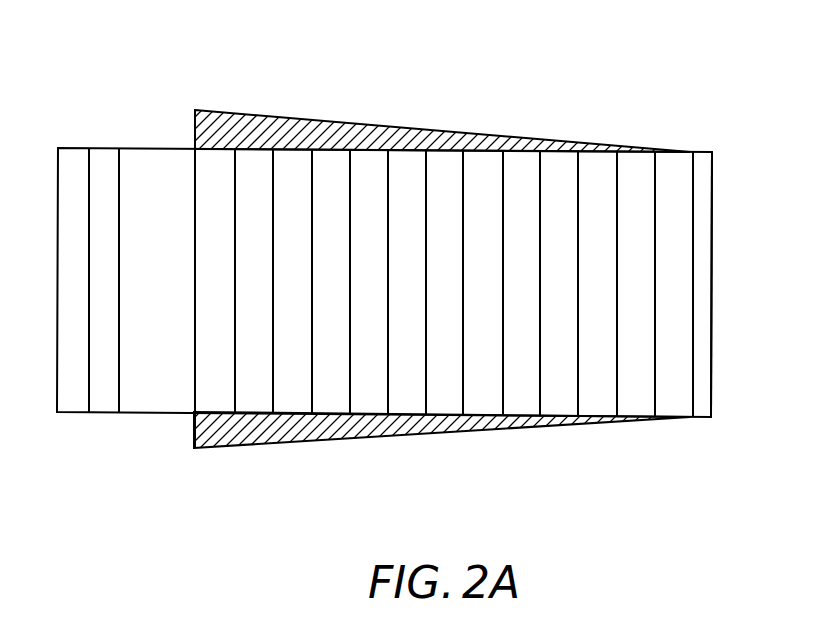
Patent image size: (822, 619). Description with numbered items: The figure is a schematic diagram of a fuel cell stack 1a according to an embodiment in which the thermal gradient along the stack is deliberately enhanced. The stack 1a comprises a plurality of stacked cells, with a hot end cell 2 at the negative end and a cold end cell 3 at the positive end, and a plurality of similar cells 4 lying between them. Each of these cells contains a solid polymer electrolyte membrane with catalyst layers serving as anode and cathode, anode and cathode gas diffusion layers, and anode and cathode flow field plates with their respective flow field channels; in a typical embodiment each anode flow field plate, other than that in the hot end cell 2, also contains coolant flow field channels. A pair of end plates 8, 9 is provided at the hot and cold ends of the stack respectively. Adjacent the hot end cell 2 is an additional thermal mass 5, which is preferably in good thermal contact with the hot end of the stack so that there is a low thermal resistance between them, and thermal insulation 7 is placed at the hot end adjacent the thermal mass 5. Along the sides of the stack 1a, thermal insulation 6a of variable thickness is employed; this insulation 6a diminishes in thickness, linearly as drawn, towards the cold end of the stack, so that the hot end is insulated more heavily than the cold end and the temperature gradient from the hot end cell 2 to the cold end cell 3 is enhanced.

The stack 1a is at (411, 270).
The hot end cell 2 is at (212, 396).
The cold end cell 3 is at (678, 183).
The cells 4 is at (442, 160).
The thermal mass 5 is at (137, 395).
The thermal insulation of variable thickness 6a is at (350, 135).
The thermal insulation 7 is at (103, 157).
The end plate 8 is at (73, 157).
The end plate 9 is at (703, 358).